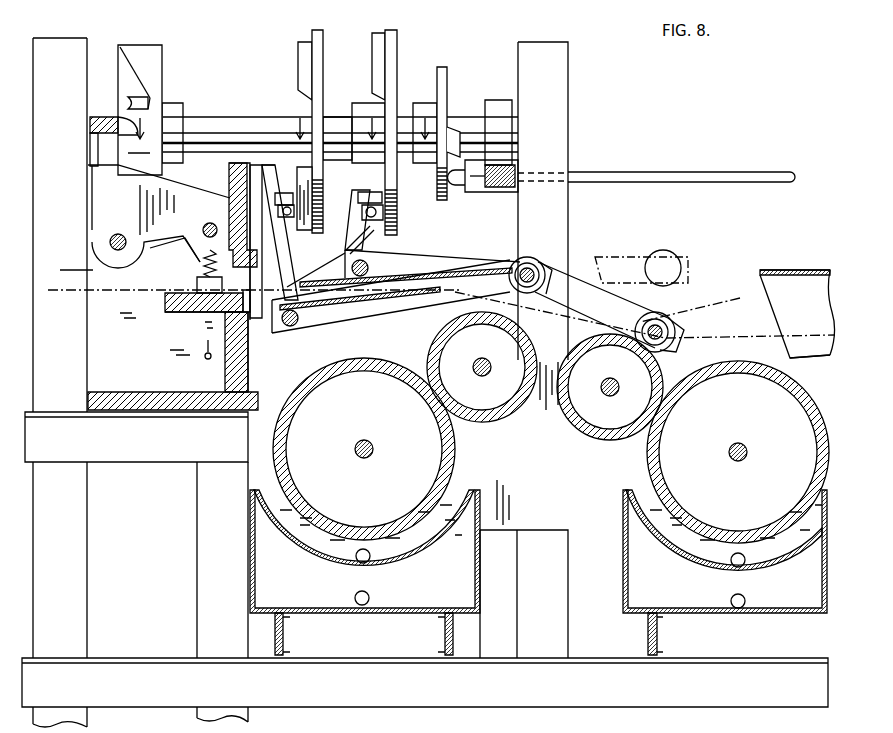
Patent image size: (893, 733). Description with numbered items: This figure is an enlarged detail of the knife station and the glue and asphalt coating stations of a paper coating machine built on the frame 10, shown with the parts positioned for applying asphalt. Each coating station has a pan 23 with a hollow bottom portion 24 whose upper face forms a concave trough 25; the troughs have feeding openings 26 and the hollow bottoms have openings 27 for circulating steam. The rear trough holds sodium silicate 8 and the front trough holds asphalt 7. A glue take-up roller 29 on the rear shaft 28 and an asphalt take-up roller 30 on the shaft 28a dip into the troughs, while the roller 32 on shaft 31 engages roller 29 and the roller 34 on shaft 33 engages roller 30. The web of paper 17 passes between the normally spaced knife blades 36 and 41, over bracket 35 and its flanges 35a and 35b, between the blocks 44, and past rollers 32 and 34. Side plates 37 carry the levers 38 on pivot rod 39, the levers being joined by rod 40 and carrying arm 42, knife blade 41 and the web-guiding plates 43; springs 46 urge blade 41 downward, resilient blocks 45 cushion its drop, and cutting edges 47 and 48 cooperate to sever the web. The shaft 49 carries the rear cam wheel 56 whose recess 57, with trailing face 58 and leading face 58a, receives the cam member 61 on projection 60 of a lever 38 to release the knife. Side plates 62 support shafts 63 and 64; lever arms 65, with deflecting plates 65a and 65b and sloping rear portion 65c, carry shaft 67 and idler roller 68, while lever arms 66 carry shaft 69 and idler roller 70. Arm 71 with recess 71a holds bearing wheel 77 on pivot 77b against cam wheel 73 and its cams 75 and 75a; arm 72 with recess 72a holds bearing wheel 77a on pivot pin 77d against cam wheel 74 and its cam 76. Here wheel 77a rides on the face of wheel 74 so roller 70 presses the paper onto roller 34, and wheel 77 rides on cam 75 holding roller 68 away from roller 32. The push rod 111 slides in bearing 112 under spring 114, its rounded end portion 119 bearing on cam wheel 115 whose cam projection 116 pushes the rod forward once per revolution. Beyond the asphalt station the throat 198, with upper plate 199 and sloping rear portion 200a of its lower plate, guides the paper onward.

The asphalt 7 is at (680, 530).
The sodium silicate 8 is at (300, 528).
The frame 10 is at (136, 460).
The web of paper 17 is at (72, 292).
The pan 23 is at (432, 614).
The hollow bottom portion 24 is at (270, 607).
The trough 25 is at (333, 563).
The feeding opening 26 is at (366, 549).
The opening 27 is at (369, 596).
The lateral shaft 28 is at (368, 441).
The lateral shaft 28a is at (742, 443).
The glue take-up roller 29 is at (446, 470).
The asphalt take-up roller 30 is at (650, 462).
The lateral shaft 31 is at (480, 376).
The roller 32 is at (512, 418).
The lateral shaft 33 is at (606, 395).
The roller 34 is at (590, 436).
The horizontal bracket 35 is at (170, 400).
The front end flange 35a is at (225, 372).
The flange 35b is at (170, 312).
The knife blade 36 is at (250, 385).
The side plate 37 is at (71, 270).
The lever 38 is at (108, 195).
The pivot rod 39 is at (110, 242).
The rod 40 is at (206, 224).
The knife blade 41 is at (229, 172).
The arm 42 is at (229, 184).
The plate 43 is at (258, 318).
The block 44 is at (176, 293).
The resilient block 45 is at (196, 278).
The spring 46 is at (188, 246).
The cutting edge 47 is at (246, 290).
The cutting edge 48 is at (214, 252).
The shaft 49 is at (216, 120).
The rear cam wheel 56 is at (162, 65).
The recess 57 is at (152, 97).
The trailing face 58 is at (120, 60).
The leading face 58a is at (126, 103).
The projection 60 is at (90, 140).
The cam member 61 is at (97, 117).
The side plate 62 is at (460, 250).
The lateral shaft 63 is at (292, 327).
The lateral shaft 64 is at (352, 268).
The lever arm 65 is at (345, 325).
The upper deflecting plate 65a is at (470, 275).
The lower deflecting plate 65b is at (370, 305).
The rear portion 65c is at (330, 262).
The lever arm 66 is at (600, 280).
The lateral shaft 67 is at (540, 258).
The idler roller 68 is at (526, 256).
The lateral shaft 69 is at (676, 327).
The idler roller 70 is at (656, 286).
The arm 71 is at (286, 262).
The recess 71a is at (268, 182).
The arm 72 is at (352, 232).
The recess 72a is at (372, 192).
The cam wheel 73 is at (323, 62).
The cam wheel 74 is at (397, 80).
The cam projection 75 is at (312, 180).
The cam projection 75a is at (298, 50).
The cam projection 76 is at (372, 71).
The bearing wheel 77 is at (284, 194).
The bearing wheel 77a is at (383, 212).
The pivot 77b is at (285, 217).
The pivot pin 77d is at (372, 243).
The push rod 111 is at (742, 176).
The bearing 112 is at (495, 192).
The spring 114 is at (528, 165).
The cam wheel 115 is at (447, 70).
The cam projection 116 is at (456, 128).
The rounded end 119 is at (453, 188).
The throat 198 is at (804, 265).
The upper plate 199 is at (766, 270).
The rear portion 200a is at (806, 359).